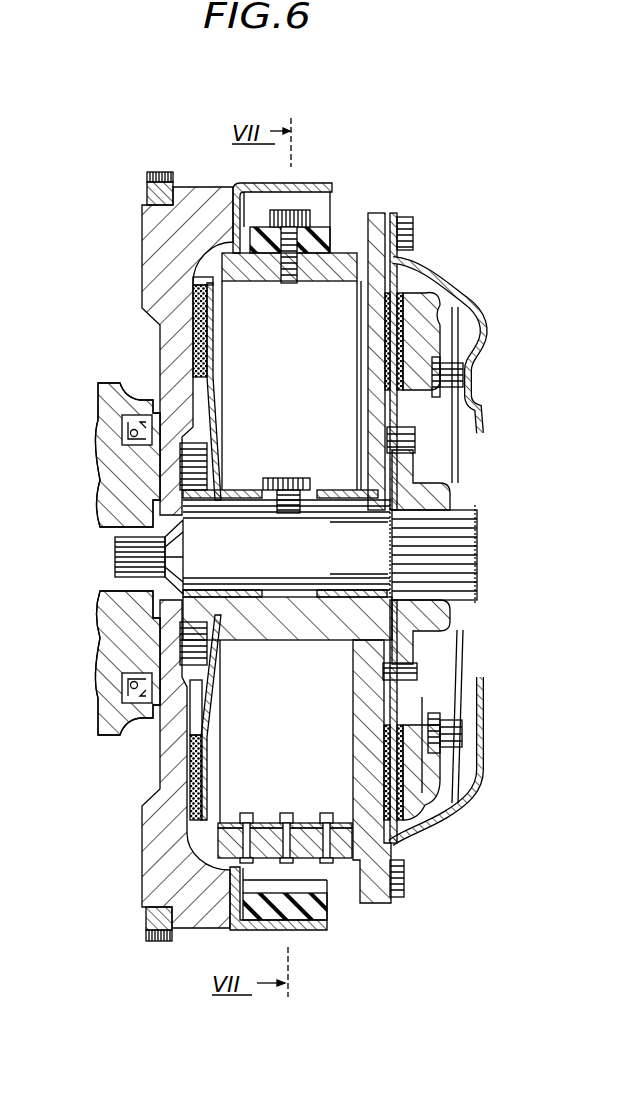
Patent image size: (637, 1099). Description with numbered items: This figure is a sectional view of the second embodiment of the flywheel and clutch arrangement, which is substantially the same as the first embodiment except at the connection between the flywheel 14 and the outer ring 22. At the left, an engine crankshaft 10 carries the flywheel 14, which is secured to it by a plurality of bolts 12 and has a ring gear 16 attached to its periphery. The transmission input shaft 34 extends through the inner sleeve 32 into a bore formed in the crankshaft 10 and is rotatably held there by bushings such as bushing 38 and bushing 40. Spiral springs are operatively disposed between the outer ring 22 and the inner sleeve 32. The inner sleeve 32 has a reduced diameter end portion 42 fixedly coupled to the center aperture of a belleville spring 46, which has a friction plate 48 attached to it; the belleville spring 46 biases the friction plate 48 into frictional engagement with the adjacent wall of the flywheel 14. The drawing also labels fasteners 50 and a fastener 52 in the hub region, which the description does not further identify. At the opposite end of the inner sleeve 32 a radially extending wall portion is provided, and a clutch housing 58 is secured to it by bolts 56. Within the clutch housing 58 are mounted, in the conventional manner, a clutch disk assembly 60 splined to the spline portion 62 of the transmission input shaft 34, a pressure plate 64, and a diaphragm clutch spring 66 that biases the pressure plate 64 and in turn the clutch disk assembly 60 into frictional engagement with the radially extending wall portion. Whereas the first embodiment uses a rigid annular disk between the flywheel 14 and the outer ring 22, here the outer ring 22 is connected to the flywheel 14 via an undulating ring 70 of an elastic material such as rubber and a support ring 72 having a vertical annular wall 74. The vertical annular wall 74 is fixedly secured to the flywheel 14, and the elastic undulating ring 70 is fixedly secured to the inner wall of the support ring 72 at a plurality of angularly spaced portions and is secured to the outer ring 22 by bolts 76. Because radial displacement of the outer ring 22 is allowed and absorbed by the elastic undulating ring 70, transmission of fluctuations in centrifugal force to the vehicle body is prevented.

The engine crankshaft 10 is at (125, 497).
The bolts 12 is at (202, 470).
The flywheel 14 is at (148, 279).
The ring gear 16 is at (147, 192).
The outer ring 22 is at (368, 238).
The inner sleeve 32 is at (316, 635).
The transmission input shaft 34 is at (332, 573).
The bushing 38 is at (249, 502).
The bushing 40 is at (356, 592).
The reduced diameter end portion 42 is at (198, 520).
The belleville spring 46 is at (214, 416).
The friction plate 48 is at (207, 330).
The rivets 50 is at (326, 812).
The bolt 52 is at (290, 478).
The bolts 56 is at (412, 229).
The clutch housing 58 is at (482, 808).
The clutch disk assembly 60 is at (396, 698).
The spline portion 62 is at (460, 542).
The pressure plate 64 is at (423, 800).
The diaphragm clutch spring 66 is at (456, 453).
The undulating ring 70 is at (343, 250).
The support ring 72 is at (256, 184).
The vertical annular wall 74 is at (323, 883).
The bolts 76 is at (292, 212).